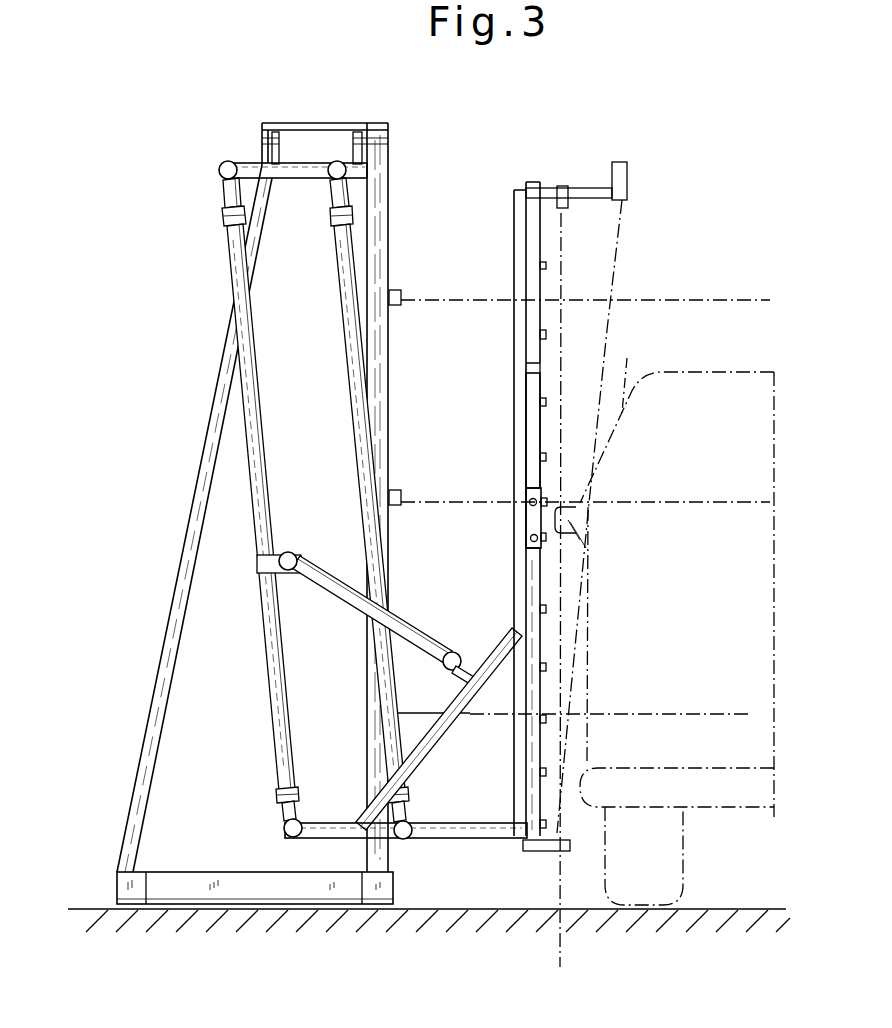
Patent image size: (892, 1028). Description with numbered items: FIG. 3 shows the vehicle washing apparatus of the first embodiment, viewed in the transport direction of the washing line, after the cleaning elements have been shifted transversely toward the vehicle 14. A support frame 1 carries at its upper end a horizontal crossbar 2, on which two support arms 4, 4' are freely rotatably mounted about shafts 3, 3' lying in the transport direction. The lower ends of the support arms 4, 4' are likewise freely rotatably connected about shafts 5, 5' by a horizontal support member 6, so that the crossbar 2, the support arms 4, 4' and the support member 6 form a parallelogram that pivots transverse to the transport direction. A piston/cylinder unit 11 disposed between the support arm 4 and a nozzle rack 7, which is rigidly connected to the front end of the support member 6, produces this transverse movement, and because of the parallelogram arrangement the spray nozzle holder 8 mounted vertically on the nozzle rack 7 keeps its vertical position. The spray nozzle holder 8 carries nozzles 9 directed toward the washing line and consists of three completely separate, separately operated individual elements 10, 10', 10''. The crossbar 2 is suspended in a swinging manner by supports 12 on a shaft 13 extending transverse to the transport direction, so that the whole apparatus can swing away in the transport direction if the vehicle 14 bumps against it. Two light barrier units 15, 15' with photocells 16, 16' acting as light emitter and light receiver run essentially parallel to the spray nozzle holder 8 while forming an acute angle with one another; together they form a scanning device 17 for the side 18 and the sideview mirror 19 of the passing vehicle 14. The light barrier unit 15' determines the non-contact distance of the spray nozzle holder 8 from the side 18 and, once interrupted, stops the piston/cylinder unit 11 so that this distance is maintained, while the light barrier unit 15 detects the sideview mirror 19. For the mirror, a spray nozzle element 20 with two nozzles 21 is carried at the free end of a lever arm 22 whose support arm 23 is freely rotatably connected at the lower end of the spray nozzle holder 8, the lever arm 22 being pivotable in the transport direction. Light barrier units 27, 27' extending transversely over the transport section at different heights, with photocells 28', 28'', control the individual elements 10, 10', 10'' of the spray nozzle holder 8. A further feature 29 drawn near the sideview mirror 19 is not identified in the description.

The support frame 1 is at (249, 253).
The horizontal crossbar 2 is at (297, 179).
The shaft 3 is at (206, 162).
The shaft 3' is at (379, 170).
The support arm 4 is at (243, 522).
The support arm 4' is at (378, 500).
The shaft 5 is at (269, 827).
The shaft 5' is at (419, 847).
The horizontal support member 6 is at (480, 839).
The nozzle rack 7 is at (521, 338).
The spray nozzle holder 8 is at (528, 413).
The nozzles 9 is at (546, 399).
The individual element 10 is at (492, 712).
The individual element 10' is at (498, 425).
The individual element 10'' is at (503, 283).
The piston/cylinder unit 11 is at (325, 578).
The supports 12 is at (276, 140).
The shaft 13 is at (306, 132).
The vehicle 14 is at (693, 420).
The light barrier unit 15 is at (617, 590).
The light barrier unit 15' is at (621, 516).
The photocell 16 is at (562, 507).
The photocell 16' is at (594, 545).
The scanning device 17 is at (583, 160).
The side of the vehicle 18 is at (614, 546).
The sideview mirror 19 is at (568, 519).
The spray nozzle element 20 is at (528, 520).
The nozzles 21 is at (548, 497).
The lever arm 22 is at (528, 584).
The support arm 23 is at (528, 558).
The light barrier unit 27 is at (640, 737).
The light barrier unit 27' is at (585, 405).
The photocell 28' is at (416, 476).
The photocell 28'' is at (410, 266).
The pivot 29 is at (573, 527).